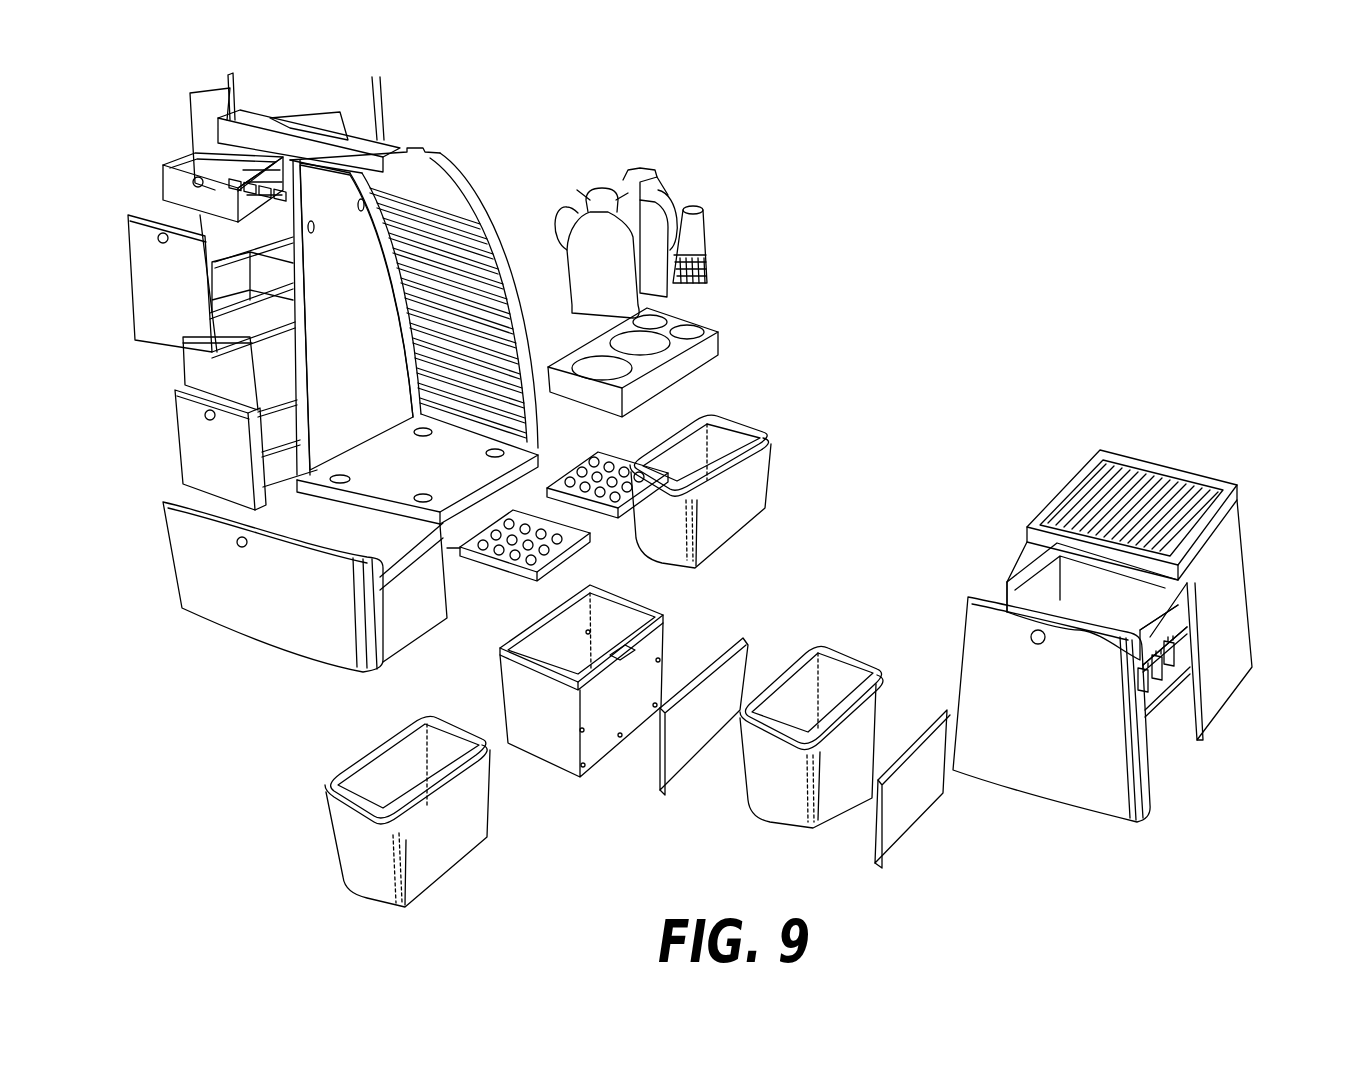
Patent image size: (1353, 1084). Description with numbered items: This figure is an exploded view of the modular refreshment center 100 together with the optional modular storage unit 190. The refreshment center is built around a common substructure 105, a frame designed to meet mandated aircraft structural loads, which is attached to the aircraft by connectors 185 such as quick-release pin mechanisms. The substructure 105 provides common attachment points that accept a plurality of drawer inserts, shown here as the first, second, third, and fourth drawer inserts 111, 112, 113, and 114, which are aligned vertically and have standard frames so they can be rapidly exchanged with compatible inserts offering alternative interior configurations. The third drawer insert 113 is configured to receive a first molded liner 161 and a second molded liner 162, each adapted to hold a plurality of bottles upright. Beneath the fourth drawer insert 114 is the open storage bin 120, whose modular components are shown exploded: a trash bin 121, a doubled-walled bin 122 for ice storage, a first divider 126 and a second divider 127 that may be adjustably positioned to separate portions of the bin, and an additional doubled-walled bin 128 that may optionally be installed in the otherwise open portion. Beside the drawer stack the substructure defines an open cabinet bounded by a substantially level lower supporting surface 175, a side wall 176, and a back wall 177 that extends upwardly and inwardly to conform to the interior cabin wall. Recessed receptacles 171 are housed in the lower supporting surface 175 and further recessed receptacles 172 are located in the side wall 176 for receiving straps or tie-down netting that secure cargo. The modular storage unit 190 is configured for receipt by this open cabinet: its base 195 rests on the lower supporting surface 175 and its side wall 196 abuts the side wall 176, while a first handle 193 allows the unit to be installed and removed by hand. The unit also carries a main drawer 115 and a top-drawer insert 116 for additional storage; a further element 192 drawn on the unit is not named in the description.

The modular refreshment center 100 is at (1167, 126).
The substructure 105 is at (458, 186).
The first drawer insert 111 is at (172, 167).
The second drawer insert 112 is at (143, 240).
The third drawer insert 113 is at (191, 377).
The fourth drawer insert 114 is at (190, 449).
The main drawer 115 is at (1157, 738).
The top-drawer insert 116 is at (1145, 627).
The open storage bin 120 is at (215, 596).
The trash bin 121 is at (666, 618).
The doubled-walled bin 122 is at (855, 652).
The first divider 126 is at (740, 655).
The second divider 127 is at (898, 838).
The additional doubled-walled bin 128 is at (460, 842).
The first molded liner 161 is at (527, 578).
The second molded liner 162 is at (578, 465).
The recessed receptacles 171 is at (345, 474).
The recessed receptacles 172 is at (313, 232).
The lower supporting surface 175 is at (434, 479).
The side wall 176 is at (377, 372).
The back wall 177 is at (487, 388).
The connectors 185 is at (378, 140).
The modular storage unit 190 is at (1096, 388).
The grate 192 is at (1155, 492).
The first handle 193 is at (765, 470).
The base 195 is at (720, 340).
The side wall 196 is at (1040, 478).